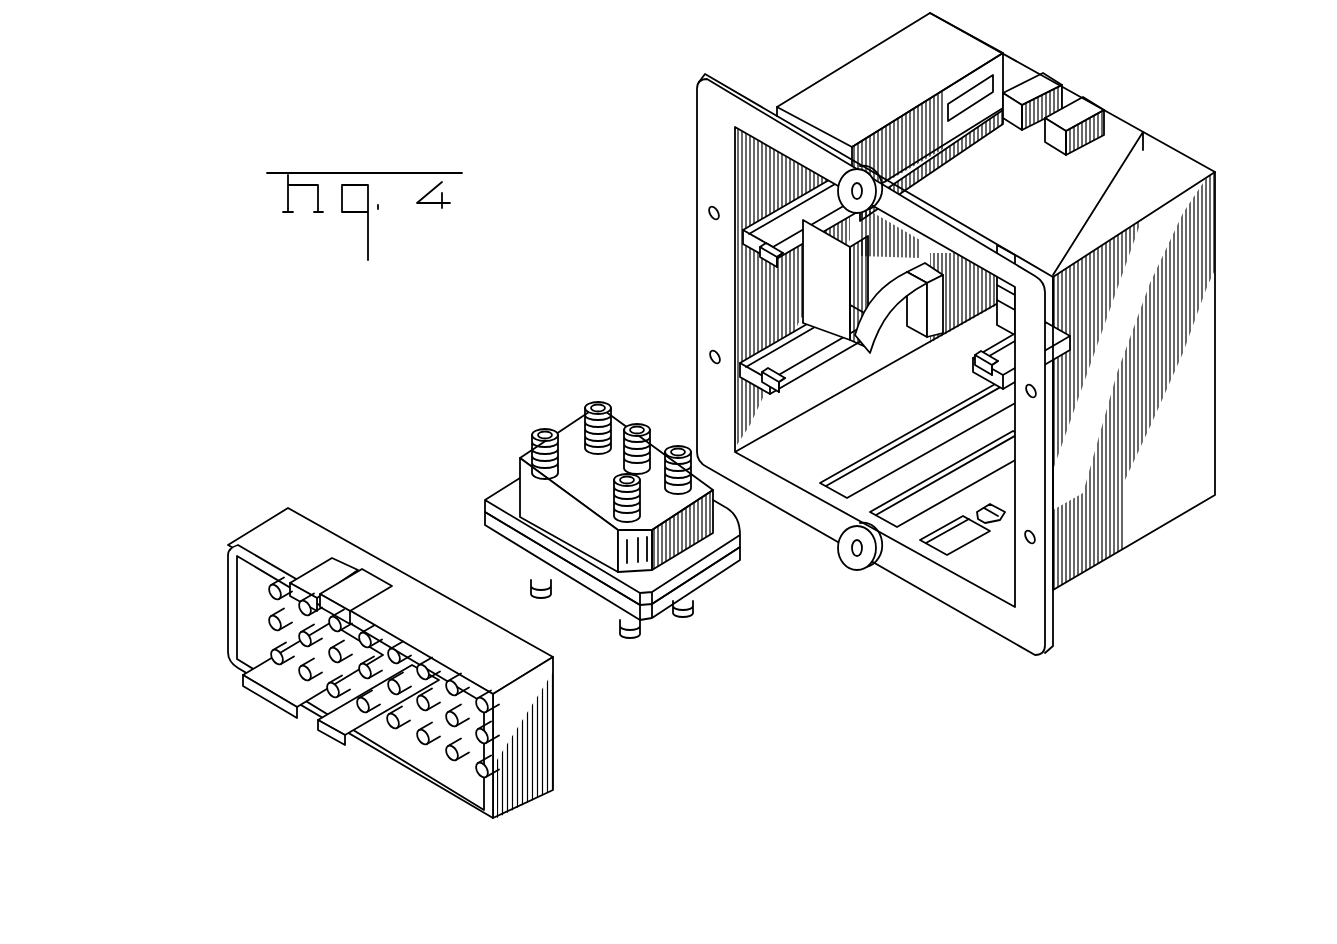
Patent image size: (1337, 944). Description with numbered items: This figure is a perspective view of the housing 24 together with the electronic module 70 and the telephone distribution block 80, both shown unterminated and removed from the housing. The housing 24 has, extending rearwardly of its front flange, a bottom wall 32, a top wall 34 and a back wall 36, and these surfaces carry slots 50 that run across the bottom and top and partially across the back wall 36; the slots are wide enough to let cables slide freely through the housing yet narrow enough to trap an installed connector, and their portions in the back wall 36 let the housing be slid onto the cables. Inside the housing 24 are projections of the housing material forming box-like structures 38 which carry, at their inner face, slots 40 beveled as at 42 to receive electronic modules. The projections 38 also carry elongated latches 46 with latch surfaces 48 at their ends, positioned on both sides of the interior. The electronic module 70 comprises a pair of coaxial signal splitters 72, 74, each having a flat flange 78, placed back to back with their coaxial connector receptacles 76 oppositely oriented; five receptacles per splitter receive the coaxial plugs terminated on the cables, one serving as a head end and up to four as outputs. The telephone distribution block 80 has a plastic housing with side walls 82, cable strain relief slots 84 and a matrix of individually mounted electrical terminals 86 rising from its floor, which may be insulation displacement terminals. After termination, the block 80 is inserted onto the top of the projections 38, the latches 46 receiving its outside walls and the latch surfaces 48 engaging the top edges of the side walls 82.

The housing 24 is at (982, 341).
The bottom wall 32 is at (1100, 567).
The top wall 34 is at (1163, 165).
The back wall 36 is at (1218, 370).
The box-like structures 38 is at (817, 275).
The slots 40 is at (927, 268).
The bevel 42 is at (877, 307).
The elongated latches 46 is at (770, 222).
The latch surfaces 48 is at (763, 368).
The slots 50 is at (1117, 128).
The electronic module 70 is at (611, 523).
The coaxial signal splitter 72 is at (560, 521).
The coaxial signal splitter 74 is at (594, 600).
The coaxial connector receptacles 76 is at (595, 408).
The flat flange 78 is at (705, 552).
The telephone distribution block 80 is at (354, 613).
The side walls 82 is at (257, 567).
The cable strain relief slots 84 is at (373, 595).
The electrical terminals 86 is at (320, 668).